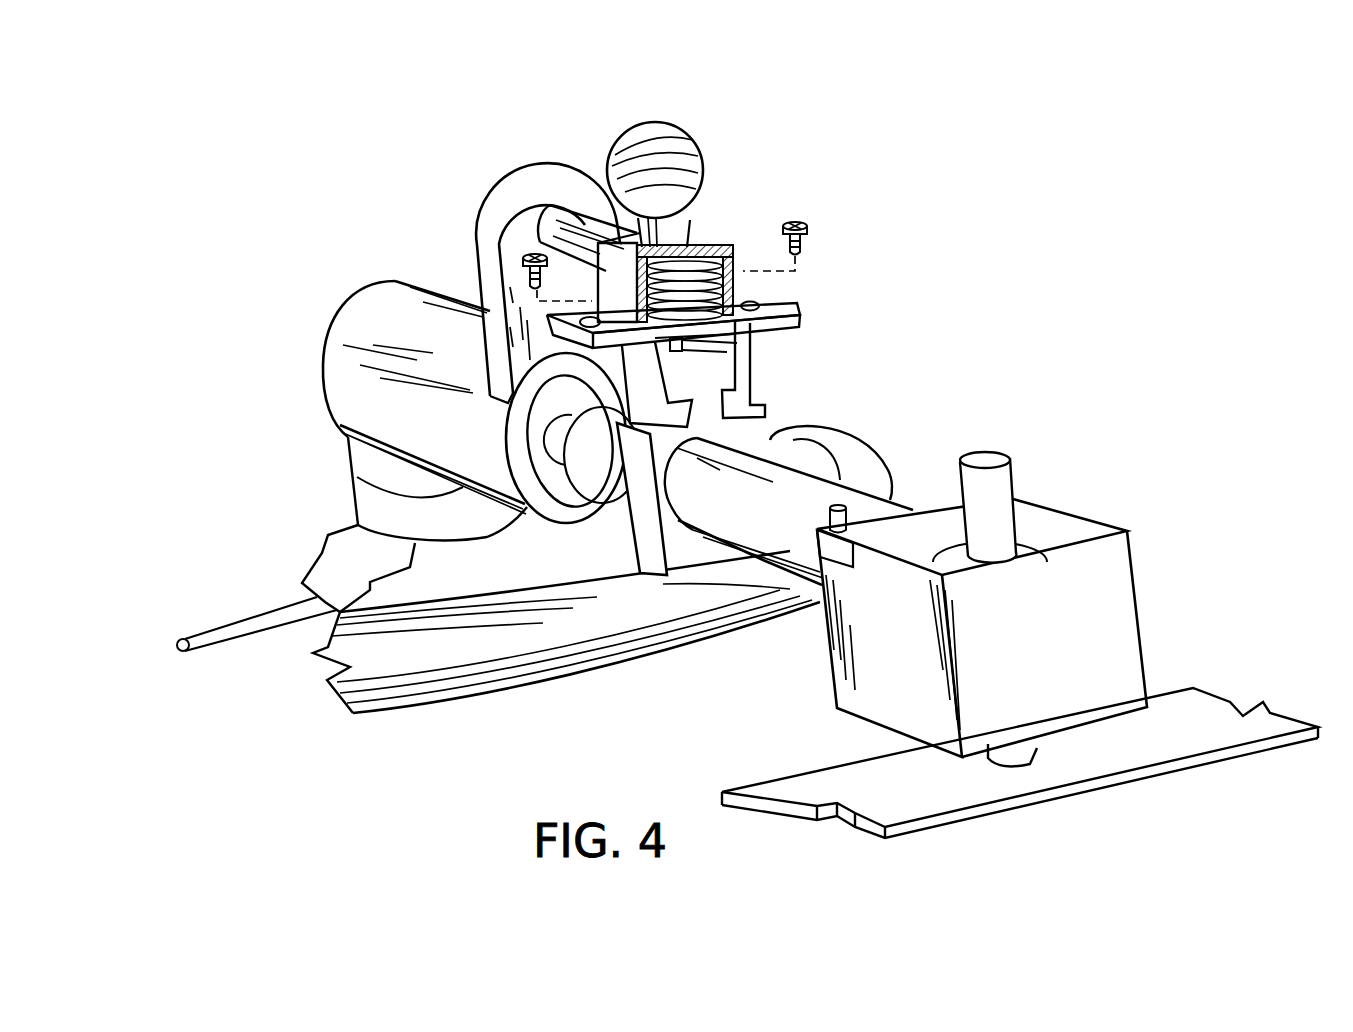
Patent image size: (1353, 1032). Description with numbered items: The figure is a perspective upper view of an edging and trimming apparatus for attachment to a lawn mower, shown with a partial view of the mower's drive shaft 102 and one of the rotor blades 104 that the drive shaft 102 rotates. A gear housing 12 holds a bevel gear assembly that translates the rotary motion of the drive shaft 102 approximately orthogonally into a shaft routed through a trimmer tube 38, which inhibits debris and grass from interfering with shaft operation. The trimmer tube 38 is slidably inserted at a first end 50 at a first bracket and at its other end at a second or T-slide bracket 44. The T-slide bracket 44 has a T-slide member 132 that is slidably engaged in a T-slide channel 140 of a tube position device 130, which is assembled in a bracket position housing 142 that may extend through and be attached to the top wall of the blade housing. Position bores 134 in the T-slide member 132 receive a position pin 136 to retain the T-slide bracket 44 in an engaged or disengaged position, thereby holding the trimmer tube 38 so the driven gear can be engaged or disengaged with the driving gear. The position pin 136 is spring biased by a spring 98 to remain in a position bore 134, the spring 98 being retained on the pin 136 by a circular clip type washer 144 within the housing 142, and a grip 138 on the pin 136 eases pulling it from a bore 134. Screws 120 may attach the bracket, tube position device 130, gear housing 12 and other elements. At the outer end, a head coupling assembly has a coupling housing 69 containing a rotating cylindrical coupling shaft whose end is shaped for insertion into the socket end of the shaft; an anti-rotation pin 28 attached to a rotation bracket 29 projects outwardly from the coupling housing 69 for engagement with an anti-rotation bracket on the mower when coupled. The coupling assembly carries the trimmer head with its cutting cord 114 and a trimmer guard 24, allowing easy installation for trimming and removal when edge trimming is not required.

The gear housing 12 is at (1102, 583).
The trimmer guard 24 is at (403, 687).
The anti-rotation pin 28 is at (557, 218).
The rotation bracket 29 is at (477, 230).
The trimmer tube 38 is at (833, 497).
The T-slide bracket 44 is at (642, 548).
The first end 50 is at (880, 500).
The coupling housing 69 is at (357, 300).
The spring 98 is at (703, 243).
The drive shaft 102 is at (1020, 757).
The rotor blades 104 is at (1210, 727).
The cutting cord 114 is at (200, 642).
The screws 120 is at (523, 260).
The tube position device 130 is at (601, 453).
The T-slide member 132 is at (703, 382).
The position bores 134 is at (700, 345).
The position pin 136 is at (730, 243).
The grip 138 is at (625, 145).
The T-slide channel 140 is at (745, 345).
The bracket position housing 142 is at (757, 304).
The circular clip type washer 144 is at (803, 305).